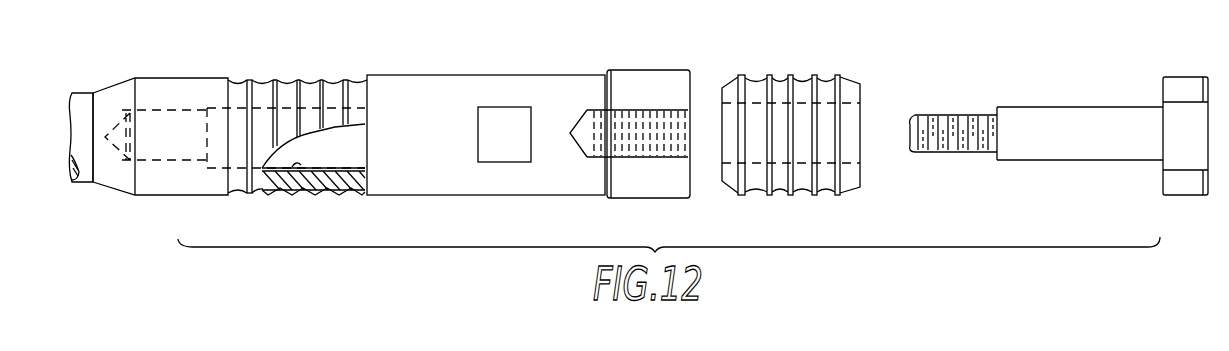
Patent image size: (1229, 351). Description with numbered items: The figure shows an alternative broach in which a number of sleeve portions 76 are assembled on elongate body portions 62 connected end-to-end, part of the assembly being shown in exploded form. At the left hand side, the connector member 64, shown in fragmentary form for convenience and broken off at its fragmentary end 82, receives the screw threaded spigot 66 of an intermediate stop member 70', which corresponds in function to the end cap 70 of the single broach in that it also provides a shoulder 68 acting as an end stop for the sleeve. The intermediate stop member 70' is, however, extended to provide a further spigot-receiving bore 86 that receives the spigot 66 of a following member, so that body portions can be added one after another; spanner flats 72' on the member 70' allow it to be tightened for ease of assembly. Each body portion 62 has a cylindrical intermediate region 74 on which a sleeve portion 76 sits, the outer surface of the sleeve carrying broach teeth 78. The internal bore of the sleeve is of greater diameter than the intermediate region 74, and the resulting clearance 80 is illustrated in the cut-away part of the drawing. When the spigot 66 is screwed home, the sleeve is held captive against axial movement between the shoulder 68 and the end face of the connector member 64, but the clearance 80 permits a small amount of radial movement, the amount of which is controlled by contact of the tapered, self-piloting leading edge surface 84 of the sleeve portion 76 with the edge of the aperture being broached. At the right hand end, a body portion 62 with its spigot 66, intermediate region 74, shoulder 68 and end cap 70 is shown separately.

The elongate body portion 62 is at (1054, 97).
The connector member 64 is at (173, 88).
The screw threaded spigot 66 is at (163, 147).
The shoulder 68 is at (360, 193).
The end cap 70 is at (1183, 115).
The intermediate stop member 70' is at (528, 113).
The spanner flats 72' is at (506, 95).
The cylindrical intermediate region 74 is at (355, 136).
The sleeve portion 76 is at (778, 54).
The broach teeth 78 is at (320, 85).
The clearance 80 is at (287, 173).
The tip 82 is at (75, 95).
The tapered self-piloting leading edge surface 84 is at (240, 90).
The spigot-receiving bore 86 is at (637, 117).